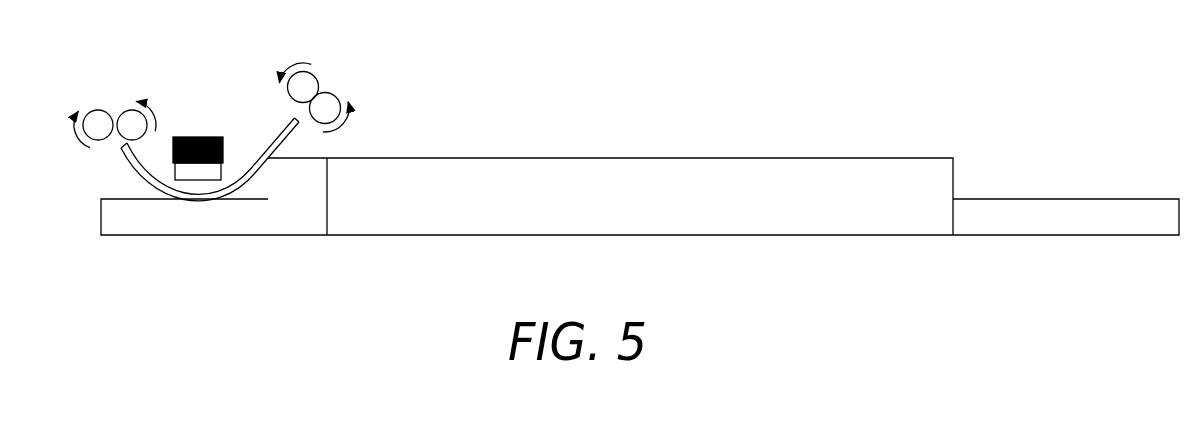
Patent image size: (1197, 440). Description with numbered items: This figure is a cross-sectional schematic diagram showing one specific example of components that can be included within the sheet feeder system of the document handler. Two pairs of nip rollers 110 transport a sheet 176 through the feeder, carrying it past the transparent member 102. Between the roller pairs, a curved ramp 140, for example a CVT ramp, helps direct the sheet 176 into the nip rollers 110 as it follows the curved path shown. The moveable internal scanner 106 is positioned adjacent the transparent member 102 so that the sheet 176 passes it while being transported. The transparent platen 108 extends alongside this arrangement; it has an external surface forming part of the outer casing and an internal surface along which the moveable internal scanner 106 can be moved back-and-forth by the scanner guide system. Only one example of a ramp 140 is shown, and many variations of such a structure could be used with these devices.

The transparent member 102 is at (175, 167).
The moveable internal scanner 106 is at (210, 137).
The transparent platen 108 is at (569, 157).
The nip rollers 110 is at (113, 102).
The ramp 140 is at (277, 202).
The sheet 176 is at (140, 176).